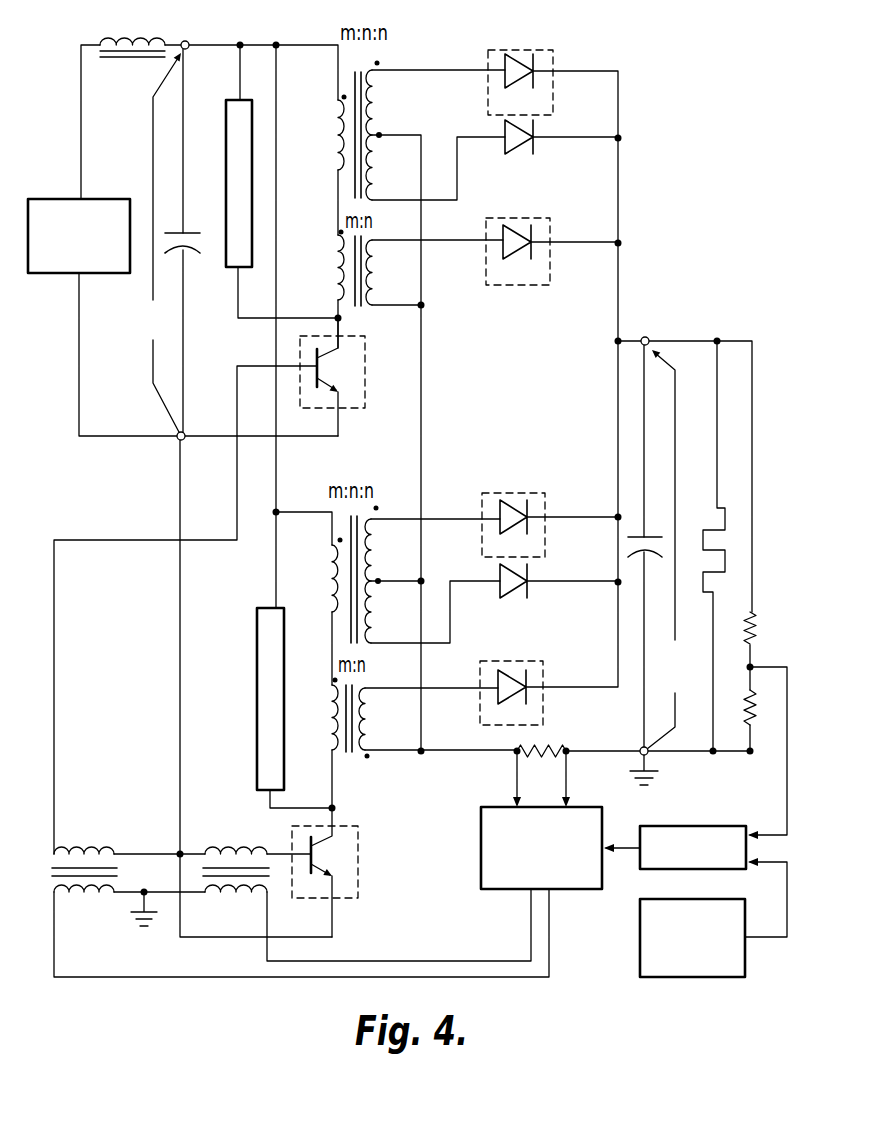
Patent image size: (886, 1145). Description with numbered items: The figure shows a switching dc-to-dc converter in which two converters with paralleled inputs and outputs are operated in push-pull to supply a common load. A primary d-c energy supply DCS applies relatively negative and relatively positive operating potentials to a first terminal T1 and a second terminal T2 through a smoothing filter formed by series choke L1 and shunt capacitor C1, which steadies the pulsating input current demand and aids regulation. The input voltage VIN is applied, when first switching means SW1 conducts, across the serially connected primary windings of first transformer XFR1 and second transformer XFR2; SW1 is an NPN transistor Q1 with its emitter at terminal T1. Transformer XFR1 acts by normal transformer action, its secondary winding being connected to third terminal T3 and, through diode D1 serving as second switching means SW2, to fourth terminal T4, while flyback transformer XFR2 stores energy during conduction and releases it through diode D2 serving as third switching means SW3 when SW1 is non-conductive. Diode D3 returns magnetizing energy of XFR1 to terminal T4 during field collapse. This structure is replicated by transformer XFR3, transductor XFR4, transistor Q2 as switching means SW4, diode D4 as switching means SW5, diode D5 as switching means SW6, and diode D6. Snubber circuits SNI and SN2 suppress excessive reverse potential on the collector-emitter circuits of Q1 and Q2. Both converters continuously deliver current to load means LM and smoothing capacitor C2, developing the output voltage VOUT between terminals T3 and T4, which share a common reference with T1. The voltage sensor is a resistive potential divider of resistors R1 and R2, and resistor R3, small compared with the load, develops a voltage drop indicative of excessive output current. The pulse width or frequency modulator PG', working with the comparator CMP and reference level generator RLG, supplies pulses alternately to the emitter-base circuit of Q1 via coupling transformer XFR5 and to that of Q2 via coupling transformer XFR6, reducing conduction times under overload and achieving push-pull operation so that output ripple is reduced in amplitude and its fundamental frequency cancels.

The series choke L1 is at (142, 30).
The second terminal T2 is at (189, 42).
The snubber circuit SNI is at (232, 100).
The primary d-c energy supply DCS is at (100, 199).
The shunt capacitor C1 is at (195, 262).
The input voltage VIN is at (160, 243).
The first terminal T1 is at (183, 443).
The first transformer XFR1 is at (328, 148).
The second transformer XFR2 is at (326, 295).
The transformer XFR3 is at (323, 589).
The transductor XFR4 is at (331, 738).
The coupling transformer XFR5 is at (111, 843).
The coupling transformer XFR6 is at (258, 843).
The NPN transistor Q1 is at (350, 379).
The transistor Q2 is at (345, 872).
The first switching means SW1 is at (365, 408).
The second switching means SW2 is at (559, 107).
The third switching means SW3 is at (550, 280).
The switching means SW4 is at (358, 891).
The switching means SW5 is at (545, 550).
The switching means SW6 is at (545, 723).
The diode D1 is at (513, 84).
The diode D2 is at (513, 259).
The diode D3 is at (513, 152).
The diode D4 is at (509, 532).
The diode D5 is at (507, 701).
The diode D6 is at (507, 596).
The snubber circuit SN2 is at (263, 607).
The fourth terminal T4 is at (646, 337).
The third terminal T3 is at (648, 760).
The smoothing capacitor C2 is at (656, 511).
The load means LM is at (729, 515).
The resistor R1 is at (755, 633).
The resistor R2 is at (755, 711).
The resistor R3 is at (563, 769).
The output voltage VOUT is at (676, 549).
The pulse width or frequency modulator PG' is at (536, 832).
The comparator CMP is at (733, 826).
The reference level generator RLG is at (640, 946).